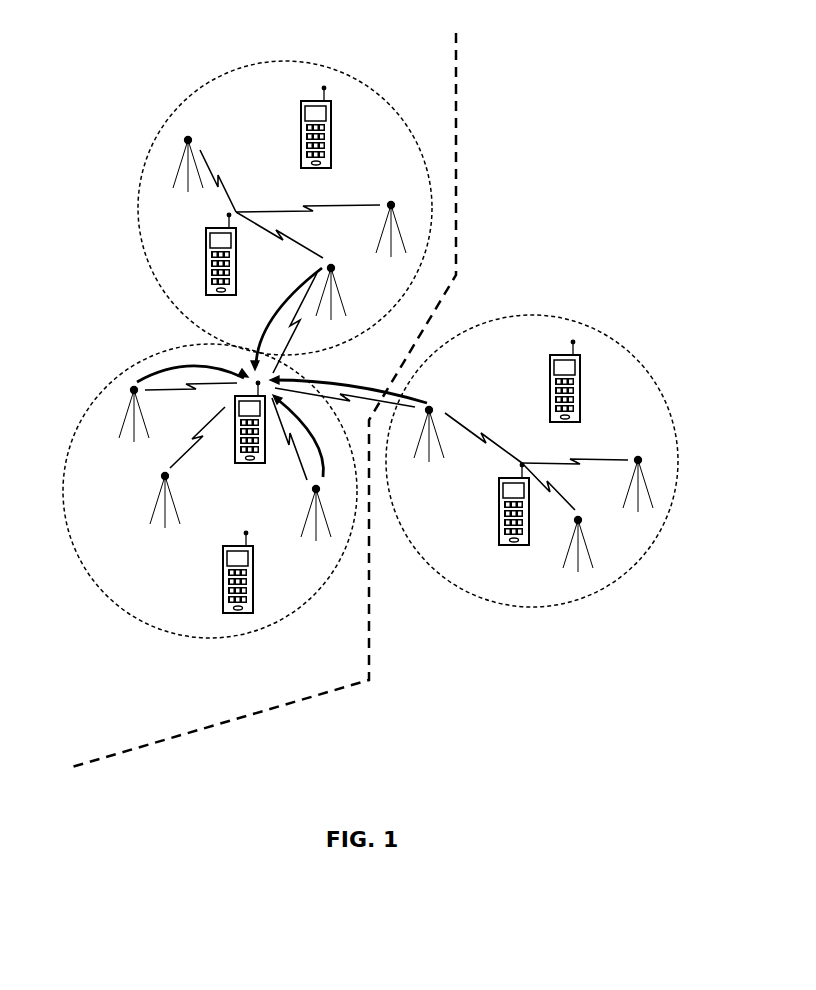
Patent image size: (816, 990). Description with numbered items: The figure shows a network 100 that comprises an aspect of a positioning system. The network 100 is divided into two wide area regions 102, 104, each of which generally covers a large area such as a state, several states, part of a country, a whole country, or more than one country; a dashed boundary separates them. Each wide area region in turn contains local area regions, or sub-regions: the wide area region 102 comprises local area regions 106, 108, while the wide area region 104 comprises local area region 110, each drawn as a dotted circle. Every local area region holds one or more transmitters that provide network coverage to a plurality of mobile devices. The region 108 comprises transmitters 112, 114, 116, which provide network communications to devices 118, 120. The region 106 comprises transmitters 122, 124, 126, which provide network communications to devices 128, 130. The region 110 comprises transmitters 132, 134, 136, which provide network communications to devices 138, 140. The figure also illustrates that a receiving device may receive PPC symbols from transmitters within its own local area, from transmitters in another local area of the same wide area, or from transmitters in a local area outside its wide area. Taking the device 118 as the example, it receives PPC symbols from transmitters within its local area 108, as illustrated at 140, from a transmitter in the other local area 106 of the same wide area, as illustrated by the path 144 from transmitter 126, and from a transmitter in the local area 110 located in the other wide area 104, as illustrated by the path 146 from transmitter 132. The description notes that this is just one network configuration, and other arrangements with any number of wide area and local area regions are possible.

The network 100 is at (619, 40).
The wide area region 102 is at (391, 72).
The wide area region 104 is at (493, 72).
The local area region 106 is at (230, 72).
The local area region 108 is at (138, 620).
The local area region 110 is at (625, 347).
The transmitter 112 is at (120, 449).
The transmitter 114 is at (144, 501).
The transmitter 116 is at (297, 513).
The device 118 is at (255, 463).
The device 120 is at (223, 588).
The transmitter 122 is at (172, 150).
The transmitter 124 is at (387, 193).
The transmitter 126 is at (344, 282).
The device 128 is at (205, 246).
The device 130 is at (300, 138).
The transmitter 132 is at (444, 467).
The transmitter 134 is at (561, 579).
The transmitter 136 is at (632, 449).
The device 138 is at (205, 392).
The device 140 is at (163, 372).
The PPC symbol reception from another local area 144 is at (270, 325).
The PPC symbol reception from another wide area 146 is at (320, 380).